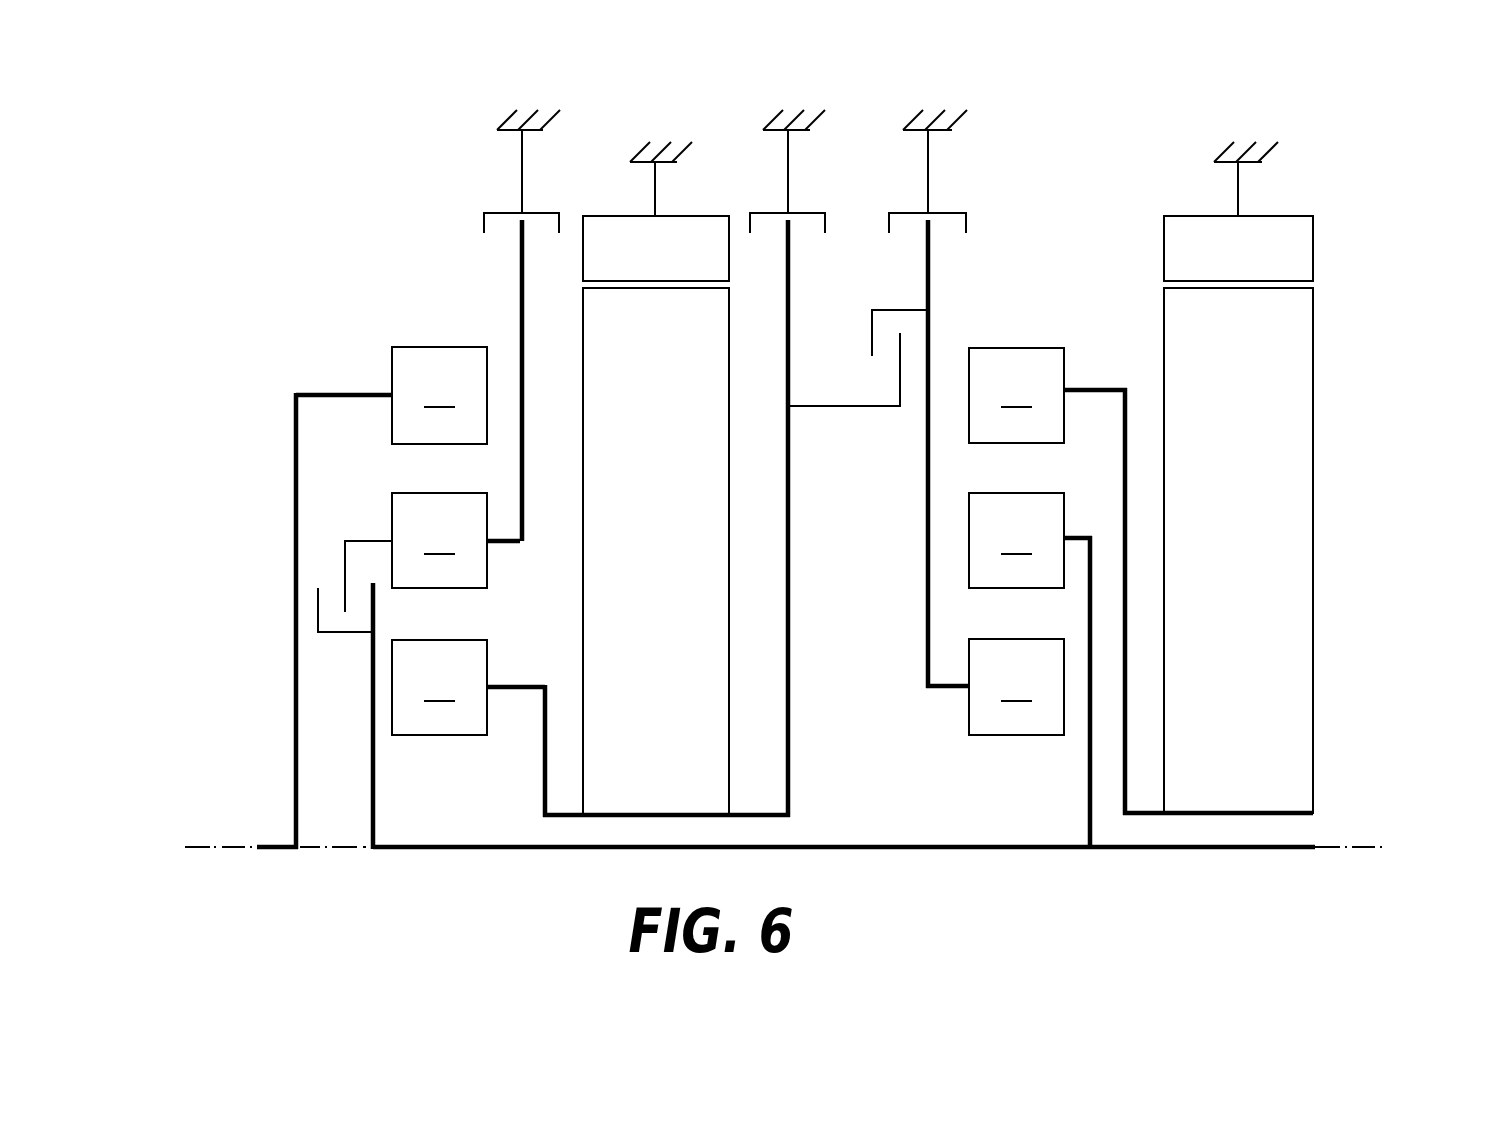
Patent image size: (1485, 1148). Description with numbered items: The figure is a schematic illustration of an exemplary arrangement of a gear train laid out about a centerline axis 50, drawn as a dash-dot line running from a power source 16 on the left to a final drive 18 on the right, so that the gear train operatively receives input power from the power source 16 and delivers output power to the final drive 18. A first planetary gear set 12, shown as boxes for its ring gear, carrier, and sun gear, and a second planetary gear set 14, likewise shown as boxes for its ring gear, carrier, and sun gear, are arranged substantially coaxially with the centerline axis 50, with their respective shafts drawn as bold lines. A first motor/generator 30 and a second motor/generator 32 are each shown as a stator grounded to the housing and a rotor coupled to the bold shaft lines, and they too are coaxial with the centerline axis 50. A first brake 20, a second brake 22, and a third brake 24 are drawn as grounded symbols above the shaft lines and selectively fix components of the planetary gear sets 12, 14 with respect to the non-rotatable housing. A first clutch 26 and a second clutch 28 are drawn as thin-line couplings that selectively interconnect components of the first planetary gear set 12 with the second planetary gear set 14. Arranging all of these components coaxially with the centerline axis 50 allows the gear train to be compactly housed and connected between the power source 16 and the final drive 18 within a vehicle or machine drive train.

The first planetary gear set 12 is at (388, 284).
The second planetary gear set 14 is at (1036, 292).
The power source 16 is at (140, 872).
The final drive 18 is at (1418, 895).
The first brake 20 is at (741, 144).
The second brake 22 is at (888, 146).
The third brake 24 is at (489, 146).
The first clutch 26 is at (377, 523).
The second clutch 28 is at (870, 297).
The first motor/generator 30 is at (636, 148).
The second motor/generator 32 is at (1209, 139).
The centerline axis 50 is at (333, 846).